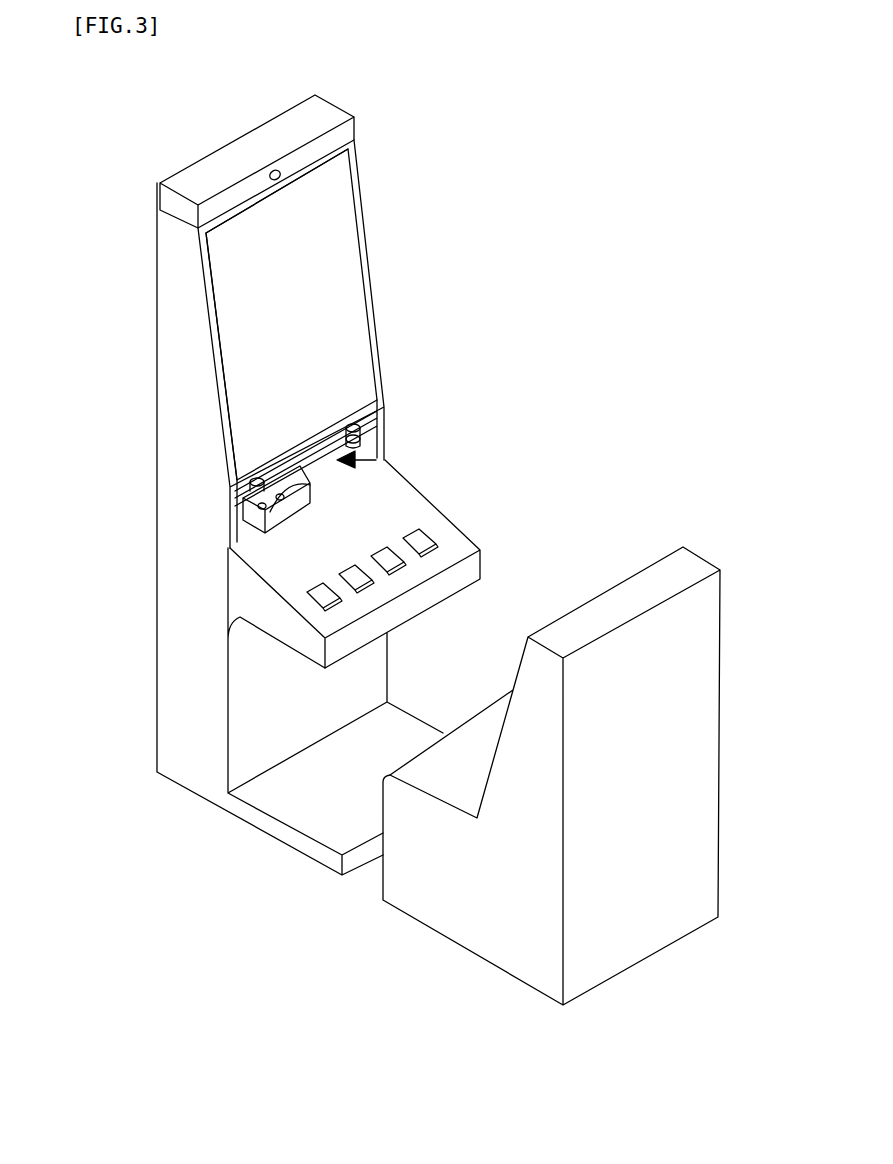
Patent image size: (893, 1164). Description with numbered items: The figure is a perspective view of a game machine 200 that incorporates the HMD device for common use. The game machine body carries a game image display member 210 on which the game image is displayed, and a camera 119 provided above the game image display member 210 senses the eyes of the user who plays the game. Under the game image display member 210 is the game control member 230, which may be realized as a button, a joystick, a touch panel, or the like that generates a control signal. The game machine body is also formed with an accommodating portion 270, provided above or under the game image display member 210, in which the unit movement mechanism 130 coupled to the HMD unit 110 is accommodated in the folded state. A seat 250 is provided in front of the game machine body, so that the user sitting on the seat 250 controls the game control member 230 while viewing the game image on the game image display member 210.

The game machine 200 is at (443, 241).
The camera 119 is at (283, 168).
The game image display member 210 is at (347, 297).
The unit movement mechanism 130 is at (327, 430).
The accommodating portion 270 is at (329, 478).
The HMD unit 110 is at (252, 517).
The game control member 230 is at (290, 578).
The seat 250 is at (598, 617).